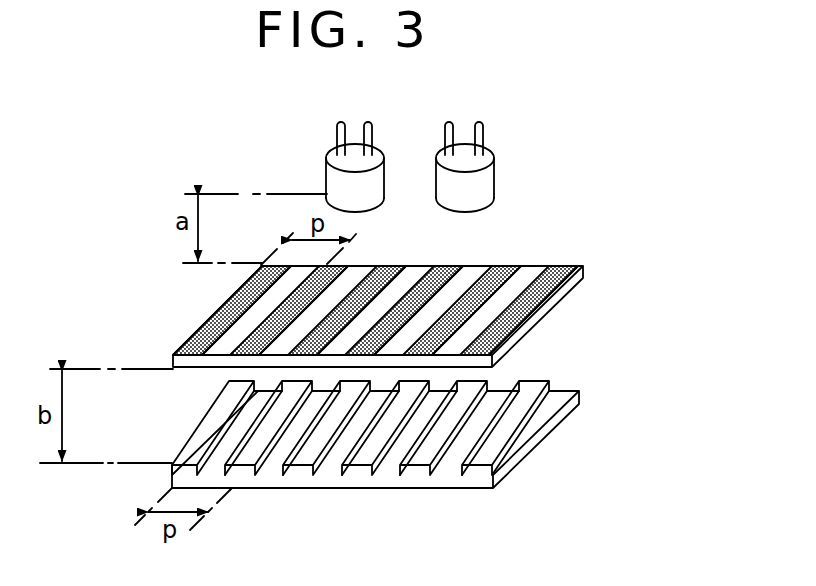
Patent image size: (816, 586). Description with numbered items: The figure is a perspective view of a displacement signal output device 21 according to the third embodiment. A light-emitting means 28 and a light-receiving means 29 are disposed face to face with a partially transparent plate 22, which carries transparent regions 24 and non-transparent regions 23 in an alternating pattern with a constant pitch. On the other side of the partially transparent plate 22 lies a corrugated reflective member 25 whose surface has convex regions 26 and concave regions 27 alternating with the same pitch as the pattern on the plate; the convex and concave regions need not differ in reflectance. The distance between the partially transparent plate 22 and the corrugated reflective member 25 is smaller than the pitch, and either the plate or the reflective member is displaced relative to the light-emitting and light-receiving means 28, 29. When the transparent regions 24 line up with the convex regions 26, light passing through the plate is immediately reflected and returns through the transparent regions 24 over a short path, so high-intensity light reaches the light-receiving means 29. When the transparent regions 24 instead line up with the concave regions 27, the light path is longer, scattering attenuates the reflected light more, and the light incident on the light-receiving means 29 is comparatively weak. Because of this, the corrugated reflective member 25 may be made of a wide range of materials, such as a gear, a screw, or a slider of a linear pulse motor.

The displacement signal output device 21 is at (639, 196).
The partially transparent plate 22 is at (397, 288).
The non-transparent regions 23 is at (567, 268).
The transparent regions 24 is at (474, 268).
The corrugated reflective member 25 is at (380, 460).
The convex regions 26 is at (296, 438).
The concave regions 27 is at (404, 472).
The light-emitting means 28 is at (327, 173).
The light-receiving means 29 is at (485, 173).